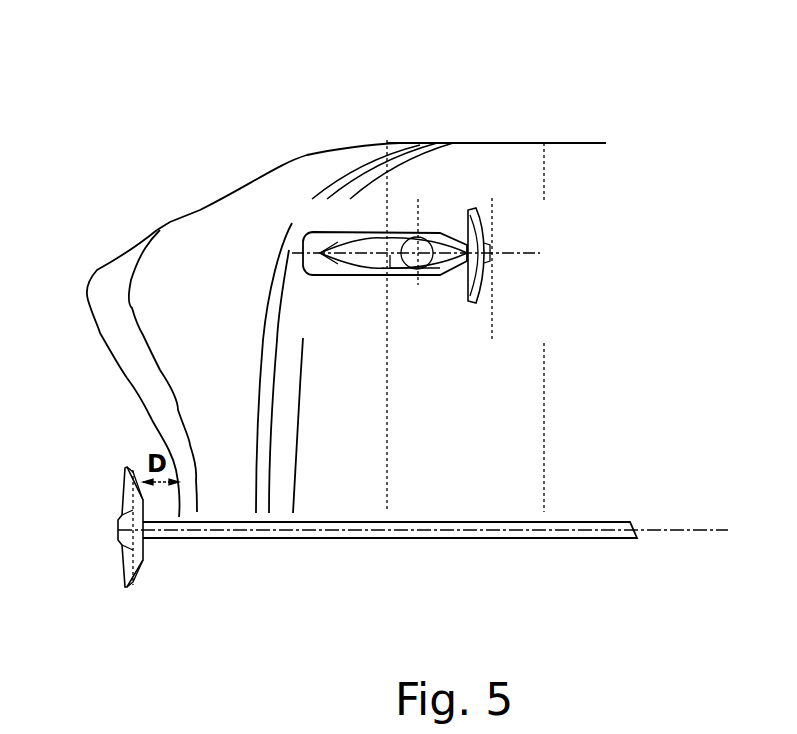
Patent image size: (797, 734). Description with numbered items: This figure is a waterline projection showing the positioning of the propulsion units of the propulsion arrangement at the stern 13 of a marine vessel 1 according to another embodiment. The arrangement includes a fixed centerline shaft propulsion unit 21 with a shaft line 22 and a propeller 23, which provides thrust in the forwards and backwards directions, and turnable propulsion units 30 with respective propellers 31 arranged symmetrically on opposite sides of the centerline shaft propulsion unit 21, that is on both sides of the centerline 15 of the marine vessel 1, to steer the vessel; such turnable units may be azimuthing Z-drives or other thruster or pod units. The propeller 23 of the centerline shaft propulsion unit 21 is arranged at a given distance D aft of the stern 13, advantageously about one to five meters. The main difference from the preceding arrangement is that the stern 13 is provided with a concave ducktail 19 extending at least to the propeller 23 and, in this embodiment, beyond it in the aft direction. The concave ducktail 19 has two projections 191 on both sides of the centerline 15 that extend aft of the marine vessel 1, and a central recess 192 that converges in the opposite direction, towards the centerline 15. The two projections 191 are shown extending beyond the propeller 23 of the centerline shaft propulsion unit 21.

The marine vessel 1 is at (630, 130).
The stern 13 is at (128, 237).
The projections 191 is at (77, 288).
The concave ducktail 19 is at (125, 395).
The central recess 192 is at (173, 497).
The fixed centerline shaft propulsion unit 21 is at (312, 510).
The shaft line 22 is at (580, 533).
The centerline 15 is at (690, 527).
The propeller 23 is at (128, 468).
The turnable propulsion units 30 is at (365, 237).
The propellers 31 is at (478, 212).